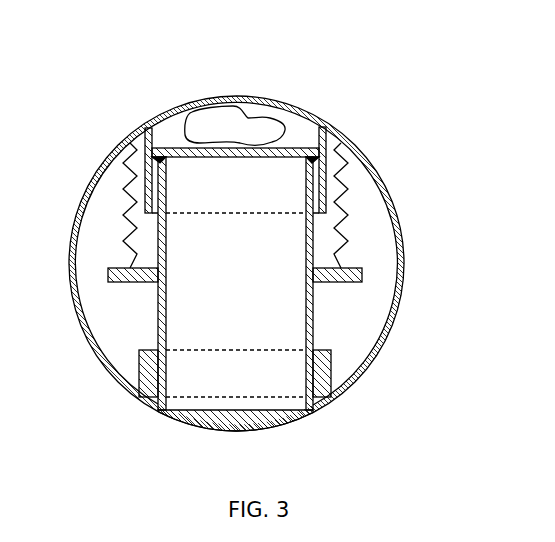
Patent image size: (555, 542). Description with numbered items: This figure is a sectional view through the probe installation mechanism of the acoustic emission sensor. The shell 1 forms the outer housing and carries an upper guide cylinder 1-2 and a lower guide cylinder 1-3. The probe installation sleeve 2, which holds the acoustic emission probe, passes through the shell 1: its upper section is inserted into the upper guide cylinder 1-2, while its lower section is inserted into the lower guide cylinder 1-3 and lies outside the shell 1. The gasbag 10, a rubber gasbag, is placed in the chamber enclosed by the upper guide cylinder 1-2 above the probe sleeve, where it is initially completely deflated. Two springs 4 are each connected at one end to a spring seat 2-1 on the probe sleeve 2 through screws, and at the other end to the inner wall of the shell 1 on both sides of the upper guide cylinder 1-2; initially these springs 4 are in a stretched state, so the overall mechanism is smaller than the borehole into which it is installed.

The shell 1 is at (135, 132).
The upper guide cylinder 1-2 is at (322, 174).
The lower guide cylinder 1-3 is at (331, 363).
The probe installation sleeve 2 is at (162, 321).
The spring seat 2-1 is at (361, 273).
The spring 4 is at (343, 238).
The gasbag 10 is at (248, 128).